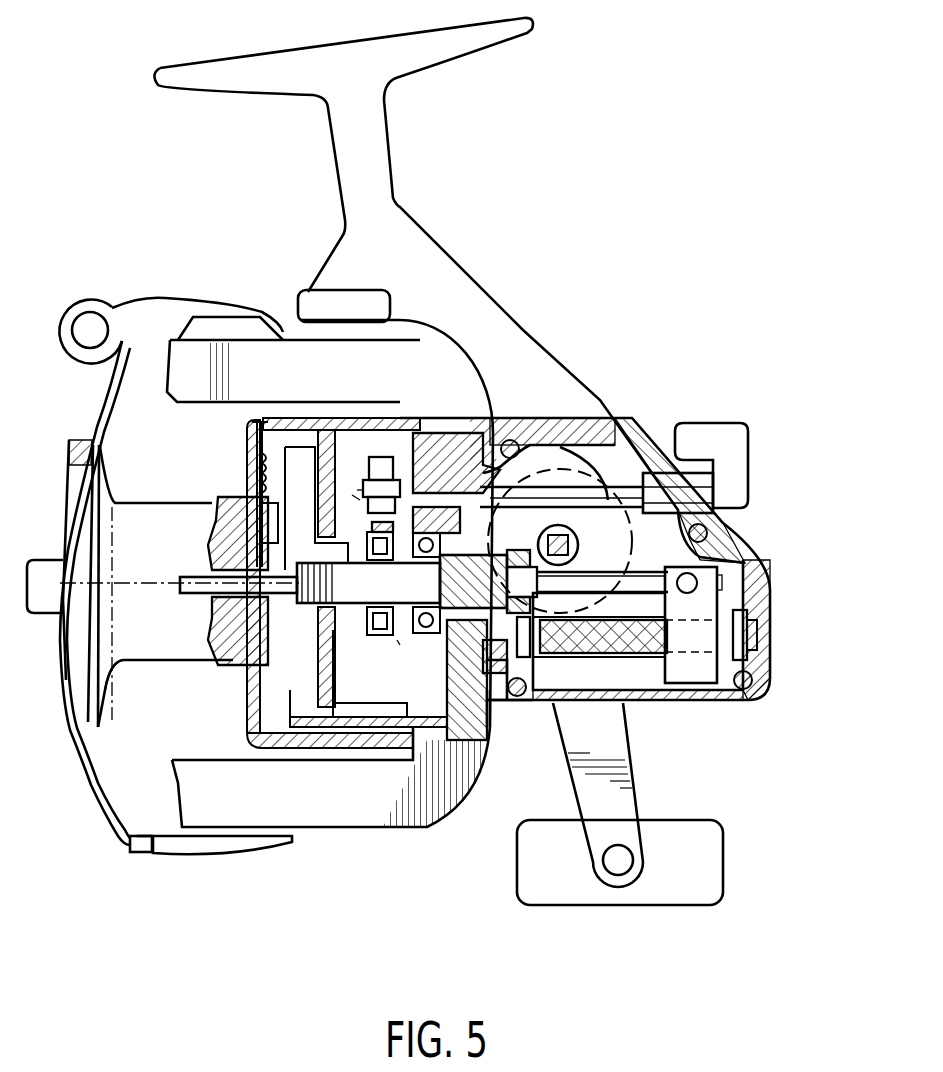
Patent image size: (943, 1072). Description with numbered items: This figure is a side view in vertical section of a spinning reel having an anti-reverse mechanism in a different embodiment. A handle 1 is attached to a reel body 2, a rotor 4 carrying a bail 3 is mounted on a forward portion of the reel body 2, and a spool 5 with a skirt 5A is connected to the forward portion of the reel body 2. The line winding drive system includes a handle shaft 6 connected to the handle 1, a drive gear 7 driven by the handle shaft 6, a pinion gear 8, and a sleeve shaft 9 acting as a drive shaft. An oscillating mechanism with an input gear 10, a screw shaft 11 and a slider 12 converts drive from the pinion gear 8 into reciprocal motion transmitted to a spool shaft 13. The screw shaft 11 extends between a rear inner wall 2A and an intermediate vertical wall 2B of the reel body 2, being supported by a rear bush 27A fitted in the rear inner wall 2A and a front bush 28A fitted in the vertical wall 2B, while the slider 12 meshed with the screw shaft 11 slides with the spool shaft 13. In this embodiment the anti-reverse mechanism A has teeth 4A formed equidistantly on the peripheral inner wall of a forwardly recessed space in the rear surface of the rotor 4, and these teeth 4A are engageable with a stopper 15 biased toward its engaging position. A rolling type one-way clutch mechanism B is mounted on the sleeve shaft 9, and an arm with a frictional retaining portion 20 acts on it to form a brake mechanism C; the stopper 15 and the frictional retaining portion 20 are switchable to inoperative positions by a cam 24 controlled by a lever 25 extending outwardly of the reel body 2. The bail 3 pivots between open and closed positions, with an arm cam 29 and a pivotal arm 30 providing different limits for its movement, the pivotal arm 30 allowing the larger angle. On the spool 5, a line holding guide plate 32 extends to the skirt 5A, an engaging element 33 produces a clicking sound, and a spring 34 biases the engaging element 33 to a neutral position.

The handle 1 is at (633, 808).
The reel body 2 is at (553, 367).
The rear inner wall 2A is at (766, 586).
The intermediate vertical wall 2B is at (596, 512).
The bail 3 is at (113, 820).
The rotor 4 is at (293, 337).
The teeth 4A is at (380, 463).
The spool 5 is at (170, 650).
The skirt 5A is at (340, 750).
The handle shaft 6 is at (560, 525).
The drive gear 7 is at (617, 417).
The pinion gear 8 is at (530, 660).
The sleeve shaft 9 is at (363, 620).
The input gear 10 is at (500, 703).
The screw shaft 11 is at (553, 643).
The slider 12 is at (693, 670).
The spool shaft 13 is at (655, 572).
The stopper 15 is at (403, 513).
The frictional retaining portion 20 is at (357, 497).
The cam 24 is at (421, 413).
The lever 25 is at (717, 427).
The rear bush 27A is at (755, 637).
The front bush 28A is at (533, 707).
The arm cam 29 is at (118, 307).
The pivotal arm 30 is at (193, 852).
The line holding guide plate 32 is at (253, 413).
The engaging element 33 is at (270, 530).
The spring 34 is at (250, 468).
The anti-reverse mechanism A is at (450, 417).
The one-way clutch mechanism B is at (397, 643).
The brake mechanism C is at (360, 490).